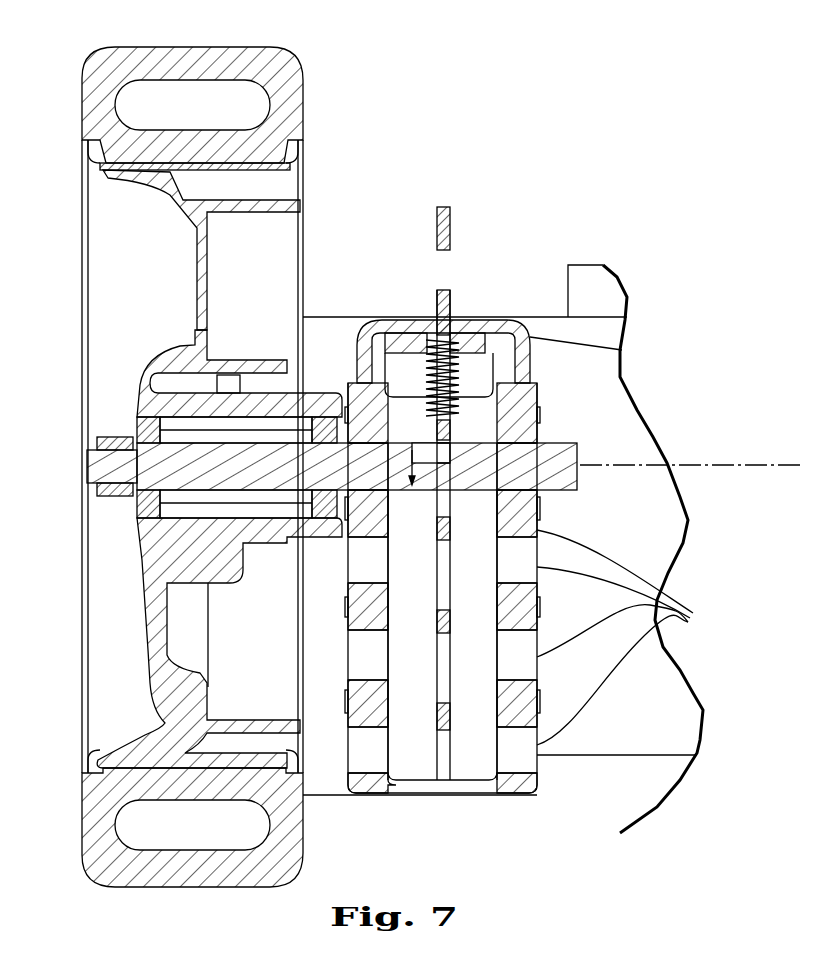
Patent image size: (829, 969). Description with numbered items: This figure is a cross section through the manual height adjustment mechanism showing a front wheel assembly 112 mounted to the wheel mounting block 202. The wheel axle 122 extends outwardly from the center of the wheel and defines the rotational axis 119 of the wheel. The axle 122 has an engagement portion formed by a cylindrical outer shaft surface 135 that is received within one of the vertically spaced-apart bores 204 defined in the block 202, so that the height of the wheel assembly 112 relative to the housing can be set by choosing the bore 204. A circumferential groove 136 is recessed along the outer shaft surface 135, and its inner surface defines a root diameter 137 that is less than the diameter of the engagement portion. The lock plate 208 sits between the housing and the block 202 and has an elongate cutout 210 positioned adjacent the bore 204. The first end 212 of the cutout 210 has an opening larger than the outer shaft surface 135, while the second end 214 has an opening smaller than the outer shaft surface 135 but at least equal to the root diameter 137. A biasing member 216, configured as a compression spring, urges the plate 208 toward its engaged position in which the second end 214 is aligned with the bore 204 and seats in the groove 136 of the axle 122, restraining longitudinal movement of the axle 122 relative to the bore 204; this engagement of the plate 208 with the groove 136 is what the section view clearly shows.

The front wheel assembly 112 is at (307, 74).
The rotational axis 119 is at (752, 466).
The wheel axle 122 is at (560, 443).
The outer shaft surface 135 is at (400, 397).
The circumferential groove 136 is at (462, 472).
The root diameter 137 is at (397, 423).
The wheel mounting block 202 is at (530, 795).
The bore 204 is at (631, 637).
The lock plate 208 is at (452, 218).
The elongate cutout 210 is at (437, 500).
The first end 212 is at (443, 510).
The second end 214 is at (450, 460).
The biasing member 216 is at (463, 340).